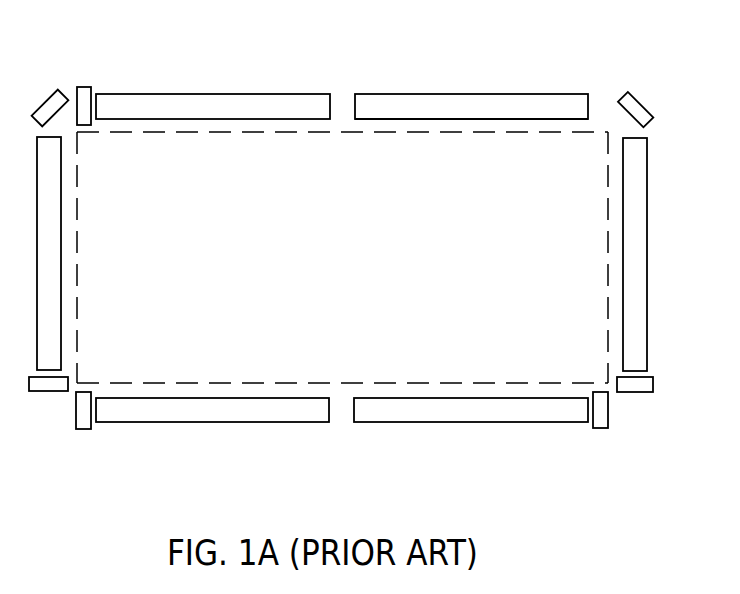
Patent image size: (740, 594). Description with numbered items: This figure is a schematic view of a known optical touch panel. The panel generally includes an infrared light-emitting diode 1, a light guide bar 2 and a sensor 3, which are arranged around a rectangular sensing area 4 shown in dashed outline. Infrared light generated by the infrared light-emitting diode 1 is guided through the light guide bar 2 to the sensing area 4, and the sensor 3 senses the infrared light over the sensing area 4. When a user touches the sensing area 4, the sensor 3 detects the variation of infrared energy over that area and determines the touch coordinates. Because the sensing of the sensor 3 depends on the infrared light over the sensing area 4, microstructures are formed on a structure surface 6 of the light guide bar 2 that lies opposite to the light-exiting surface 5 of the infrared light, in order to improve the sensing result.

The infrared light-emitting diode 1 is at (82, 95).
The light guide bar 2 is at (150, 408).
The sensor 3 is at (630, 105).
The sensing area 4 is at (513, 383).
The light-exiting surface 5 is at (542, 118).
The structure surface 6 is at (483, 93).